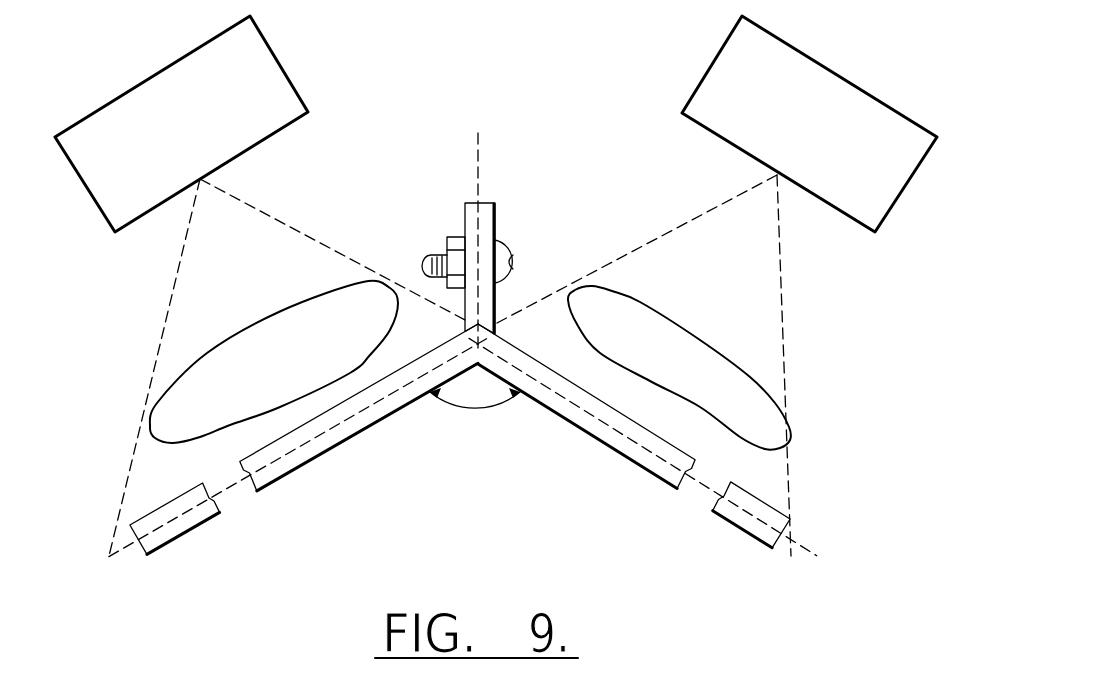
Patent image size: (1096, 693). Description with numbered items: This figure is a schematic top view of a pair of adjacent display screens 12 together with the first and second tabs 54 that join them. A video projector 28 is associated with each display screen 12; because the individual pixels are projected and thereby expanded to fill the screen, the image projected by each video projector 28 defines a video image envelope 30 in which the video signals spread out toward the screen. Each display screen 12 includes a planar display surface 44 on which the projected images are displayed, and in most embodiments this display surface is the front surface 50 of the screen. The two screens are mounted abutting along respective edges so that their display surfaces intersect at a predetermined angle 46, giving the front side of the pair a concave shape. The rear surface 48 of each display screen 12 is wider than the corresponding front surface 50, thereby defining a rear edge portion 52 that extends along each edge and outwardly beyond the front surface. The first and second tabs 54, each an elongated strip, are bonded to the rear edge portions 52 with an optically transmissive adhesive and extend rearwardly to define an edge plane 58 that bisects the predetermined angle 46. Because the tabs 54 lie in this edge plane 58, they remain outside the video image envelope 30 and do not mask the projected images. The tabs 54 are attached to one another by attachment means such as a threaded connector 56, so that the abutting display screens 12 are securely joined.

The display screen 12 is at (310, 451).
The video projector 28 is at (284, 62).
The video image envelope 30 is at (316, 318).
The planar display surface 44 is at (116, 553).
The predetermined angle 46 is at (481, 427).
The rear surface 48 is at (168, 502).
The front surface 50 is at (185, 533).
The rear edge portion 52 is at (460, 319).
The tab 54 is at (470, 206).
The threaded connector 56 is at (450, 248).
The edge plane 58 is at (484, 152).